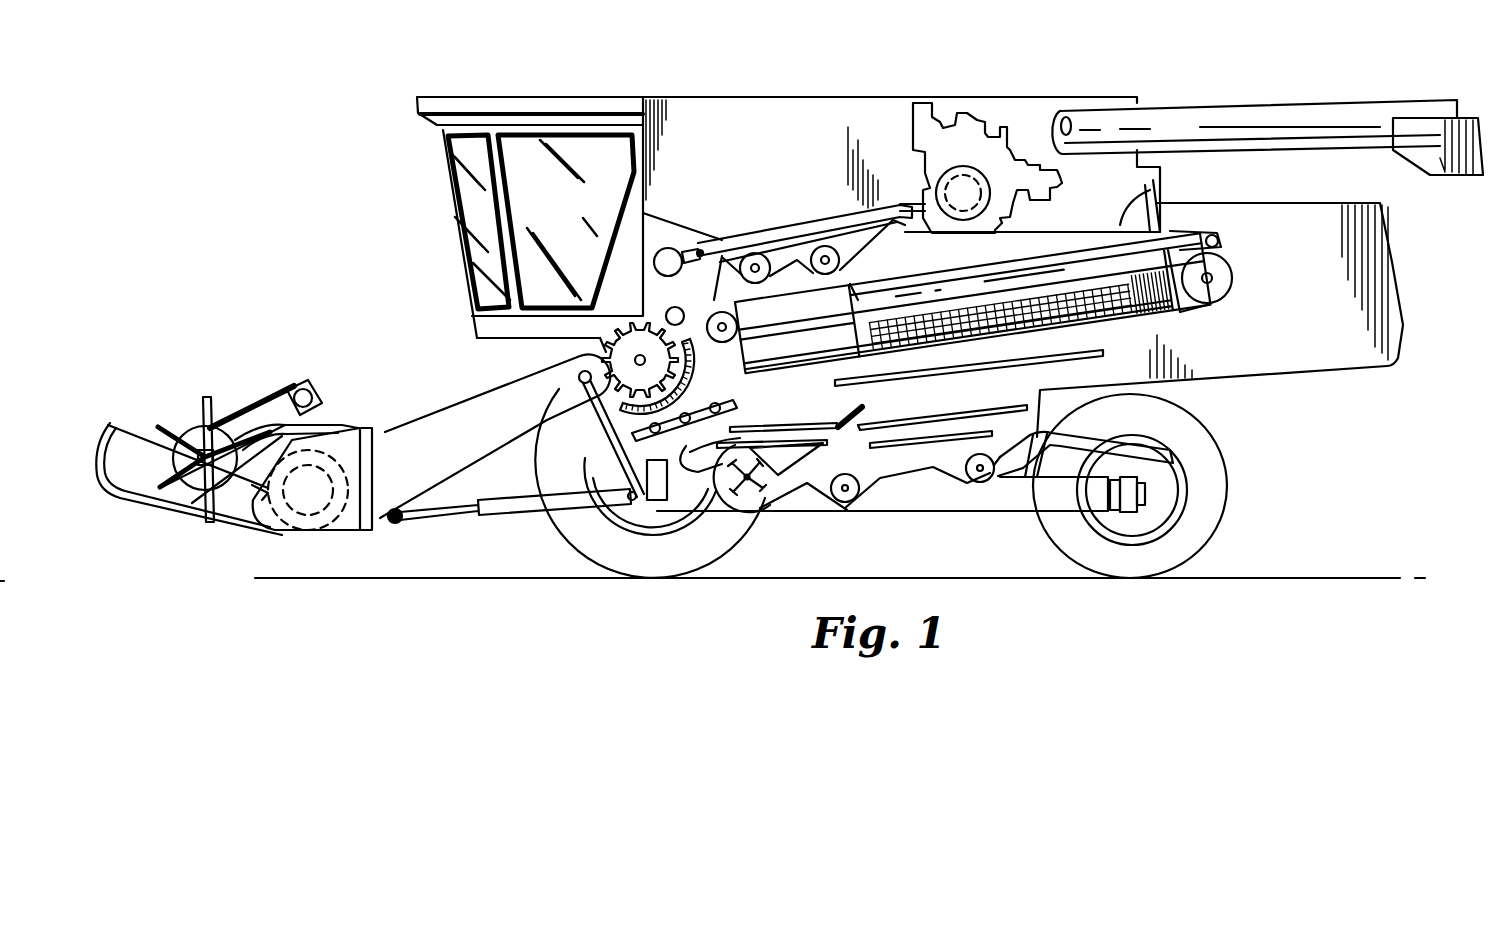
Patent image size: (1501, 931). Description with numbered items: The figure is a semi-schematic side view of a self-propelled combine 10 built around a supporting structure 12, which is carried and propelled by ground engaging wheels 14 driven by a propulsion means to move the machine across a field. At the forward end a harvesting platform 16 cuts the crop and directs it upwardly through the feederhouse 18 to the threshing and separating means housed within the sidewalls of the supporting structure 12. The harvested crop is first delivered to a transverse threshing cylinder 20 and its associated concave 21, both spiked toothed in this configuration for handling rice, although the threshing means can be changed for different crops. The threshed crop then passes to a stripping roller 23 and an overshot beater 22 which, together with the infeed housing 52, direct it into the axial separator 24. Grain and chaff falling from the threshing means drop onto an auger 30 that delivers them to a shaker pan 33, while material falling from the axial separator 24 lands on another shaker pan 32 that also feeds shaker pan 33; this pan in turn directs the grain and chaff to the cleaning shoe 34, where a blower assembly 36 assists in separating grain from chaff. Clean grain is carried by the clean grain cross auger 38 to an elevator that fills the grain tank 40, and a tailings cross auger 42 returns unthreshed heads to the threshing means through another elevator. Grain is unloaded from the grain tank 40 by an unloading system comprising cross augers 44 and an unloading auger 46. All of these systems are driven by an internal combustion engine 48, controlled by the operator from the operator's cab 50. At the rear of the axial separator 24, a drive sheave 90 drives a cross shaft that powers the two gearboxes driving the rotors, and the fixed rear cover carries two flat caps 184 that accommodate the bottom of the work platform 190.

The self-propelled combine 10 is at (812, 68).
The supporting structure 12 is at (967, 511).
The wheels 14 is at (1224, 452).
The harvesting platform 16 is at (337, 538).
The feederhouse 18 is at (424, 467).
The transverse threshing cylinder 20 is at (585, 368).
The concave 21 is at (696, 406).
The beater 22 is at (720, 243).
The stripping roller 23 is at (665, 310).
The axial separator 24 is at (984, 305).
The auger 30 is at (610, 438).
The shaker pan 32 is at (858, 413).
The shaker pan 33 is at (782, 424).
The cleaning shoe 34 is at (912, 397).
The blower assembly 36 is at (768, 515).
The clean grain cross auger 38 is at (850, 506).
The grain tank 40 is at (800, 145).
The tailings cross auger 42 is at (995, 479).
The cross augers 44 is at (823, 258).
The unloading auger 46 is at (1252, 112).
The internal combustion engine 48 is at (962, 110).
The operator's cab 50 is at (562, 217).
The infeed housing 52 is at (848, 296).
The drive sheave 90 is at (1232, 280).
The flat caps 184 is at (1177, 232).
The work platform 190 is at (1152, 196).